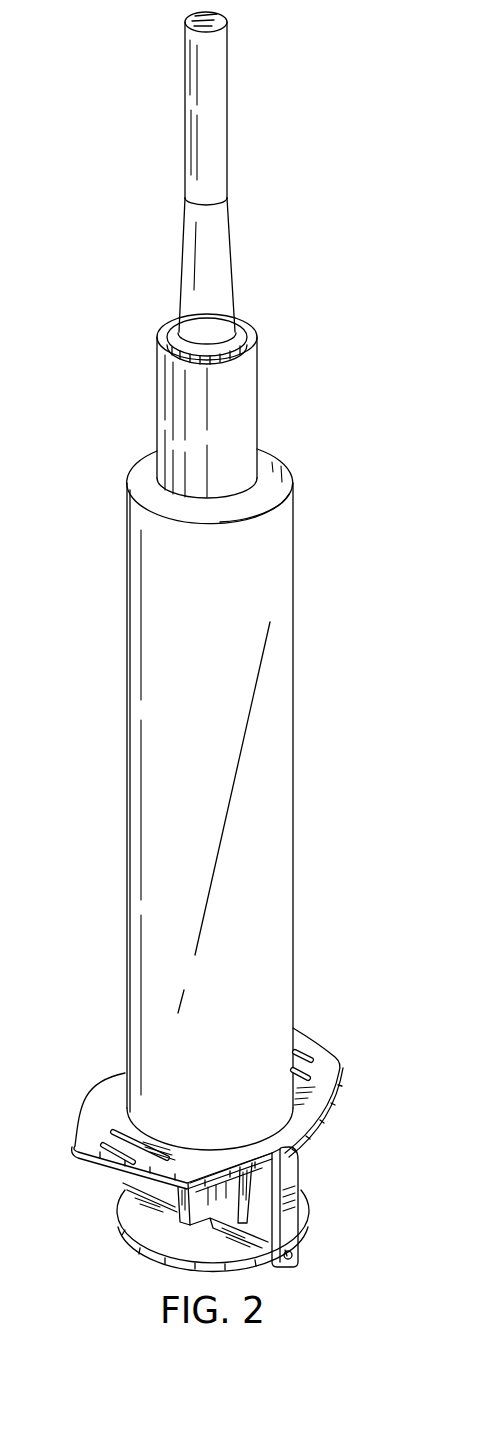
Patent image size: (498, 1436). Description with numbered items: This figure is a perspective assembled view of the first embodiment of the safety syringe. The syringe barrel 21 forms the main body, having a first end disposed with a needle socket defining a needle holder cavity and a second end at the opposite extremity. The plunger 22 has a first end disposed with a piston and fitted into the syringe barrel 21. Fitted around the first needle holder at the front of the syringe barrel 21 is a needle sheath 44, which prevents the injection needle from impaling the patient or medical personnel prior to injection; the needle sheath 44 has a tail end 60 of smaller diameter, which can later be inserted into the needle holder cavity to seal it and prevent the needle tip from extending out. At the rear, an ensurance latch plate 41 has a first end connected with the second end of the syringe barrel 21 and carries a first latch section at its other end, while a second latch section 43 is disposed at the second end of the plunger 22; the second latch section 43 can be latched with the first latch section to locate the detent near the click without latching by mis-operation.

The syringe barrel 21 is at (282, 571).
The plunger 22 is at (183, 1200).
The ensurance latch plate 41 is at (290, 1180).
The second latch section 43 is at (298, 1253).
The needle sheath 44 is at (230, 235).
The tail end 60 is at (218, 14).